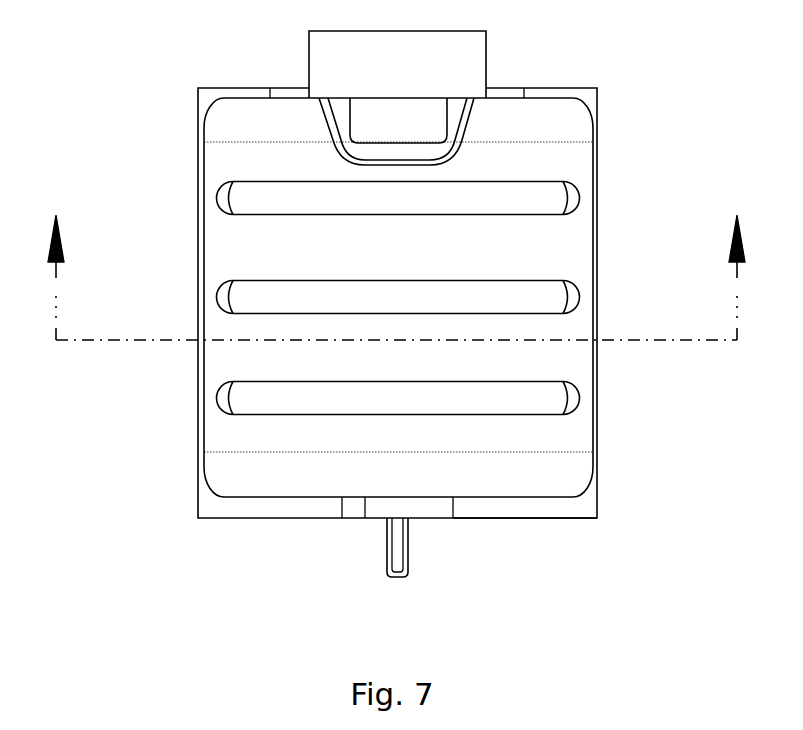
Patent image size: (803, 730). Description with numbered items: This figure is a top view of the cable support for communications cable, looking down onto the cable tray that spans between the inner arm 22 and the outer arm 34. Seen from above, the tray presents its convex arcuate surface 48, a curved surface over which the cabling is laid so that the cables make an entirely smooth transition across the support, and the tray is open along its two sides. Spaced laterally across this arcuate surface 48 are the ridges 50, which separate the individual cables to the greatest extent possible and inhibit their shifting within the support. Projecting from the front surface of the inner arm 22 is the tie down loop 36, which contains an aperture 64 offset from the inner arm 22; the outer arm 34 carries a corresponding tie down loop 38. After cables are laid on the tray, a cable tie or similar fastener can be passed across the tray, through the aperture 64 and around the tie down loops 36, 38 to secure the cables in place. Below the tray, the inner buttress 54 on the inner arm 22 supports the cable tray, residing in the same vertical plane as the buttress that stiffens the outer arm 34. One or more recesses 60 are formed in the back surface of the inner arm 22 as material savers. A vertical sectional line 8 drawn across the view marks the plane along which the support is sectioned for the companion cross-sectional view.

The inner arm 22 is at (387, 80).
The tie down loop 36 is at (453, 160).
The aperture 64 is at (398, 122).
The recesses 60 is at (598, 217).
The convex arcuate surface 48 is at (487, 259).
The ridges 50 is at (558, 397).
The section line 8- 8 is at (399, 277).
The tie down loop 38 is at (393, 507).
The inner buttress 54 is at (408, 557).
The outer arm 34 is at (530, 507).